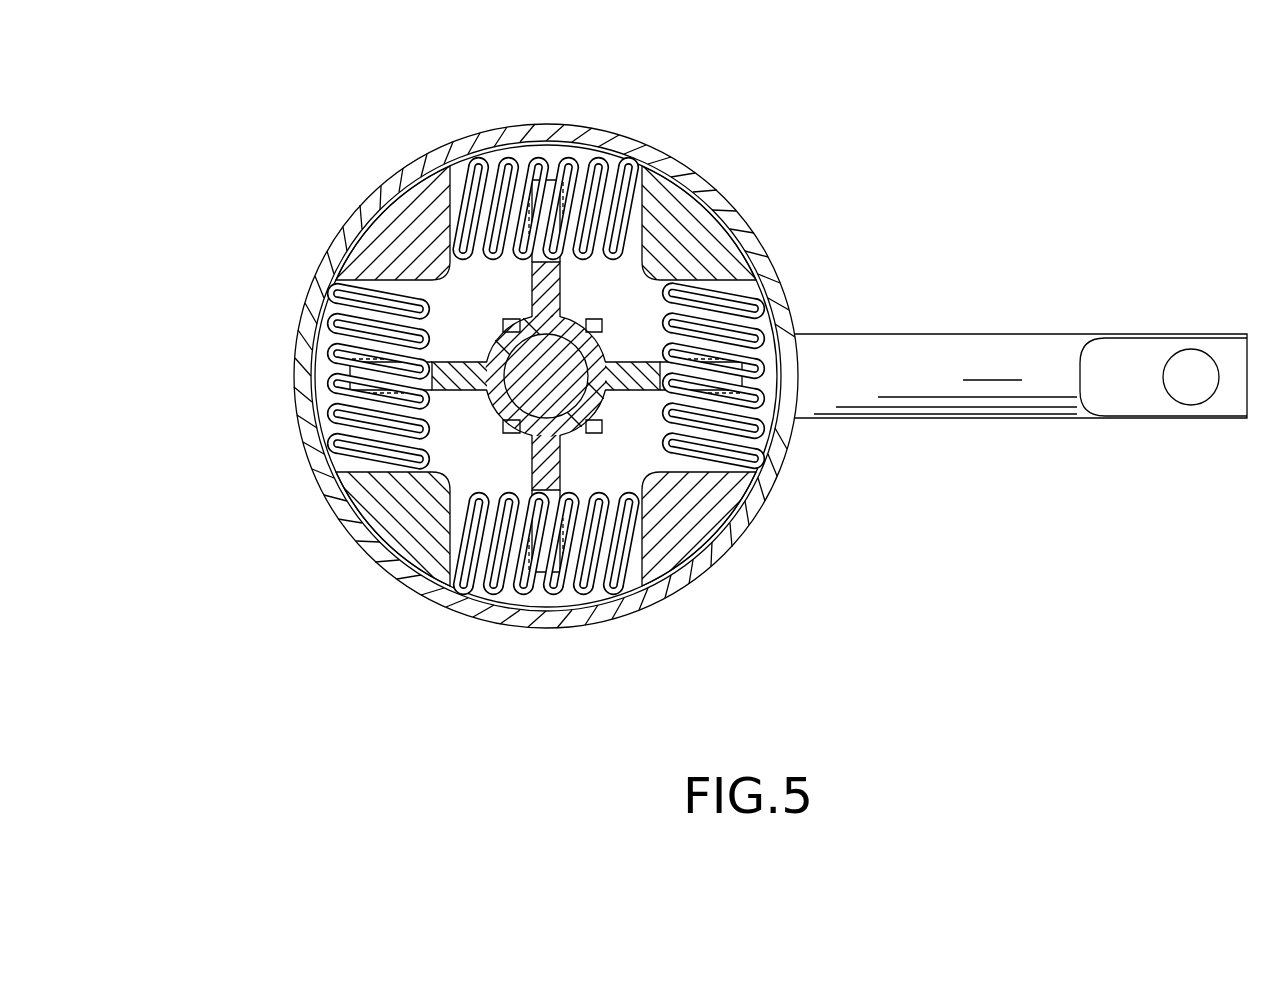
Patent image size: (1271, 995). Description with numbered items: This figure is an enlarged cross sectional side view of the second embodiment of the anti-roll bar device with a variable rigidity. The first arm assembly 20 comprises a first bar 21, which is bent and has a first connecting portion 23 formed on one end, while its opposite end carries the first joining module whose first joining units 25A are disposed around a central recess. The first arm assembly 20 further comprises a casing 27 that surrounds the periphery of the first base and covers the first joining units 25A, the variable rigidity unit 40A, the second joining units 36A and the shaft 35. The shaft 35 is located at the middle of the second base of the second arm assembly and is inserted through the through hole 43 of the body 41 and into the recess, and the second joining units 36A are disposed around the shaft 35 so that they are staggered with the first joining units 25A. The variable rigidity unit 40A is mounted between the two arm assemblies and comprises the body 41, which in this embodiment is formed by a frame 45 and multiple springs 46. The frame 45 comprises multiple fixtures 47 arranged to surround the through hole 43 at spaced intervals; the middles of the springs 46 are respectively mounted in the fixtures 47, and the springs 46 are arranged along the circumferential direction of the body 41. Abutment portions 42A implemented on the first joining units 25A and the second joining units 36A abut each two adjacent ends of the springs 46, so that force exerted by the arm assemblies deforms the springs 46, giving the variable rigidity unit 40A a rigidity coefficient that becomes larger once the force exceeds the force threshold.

The first arm assembly 20 is at (1020, 358).
The first bar 21 is at (945, 388).
The first connecting portion 23 is at (1154, 343).
The first joining unit 25A is at (388, 220).
The casing 27 is at (564, 124).
The shaft 35 is at (528, 398).
The second joining unit 36A is at (712, 528).
The variable rigidity unit 40A is at (315, 358).
The body 41 is at (601, 318).
The abutment portion 42A is at (746, 288).
The through hole 43 is at (565, 410).
The frame 45 is at (592, 394).
The spring 46 is at (508, 160).
The fixture 47 is at (563, 226).